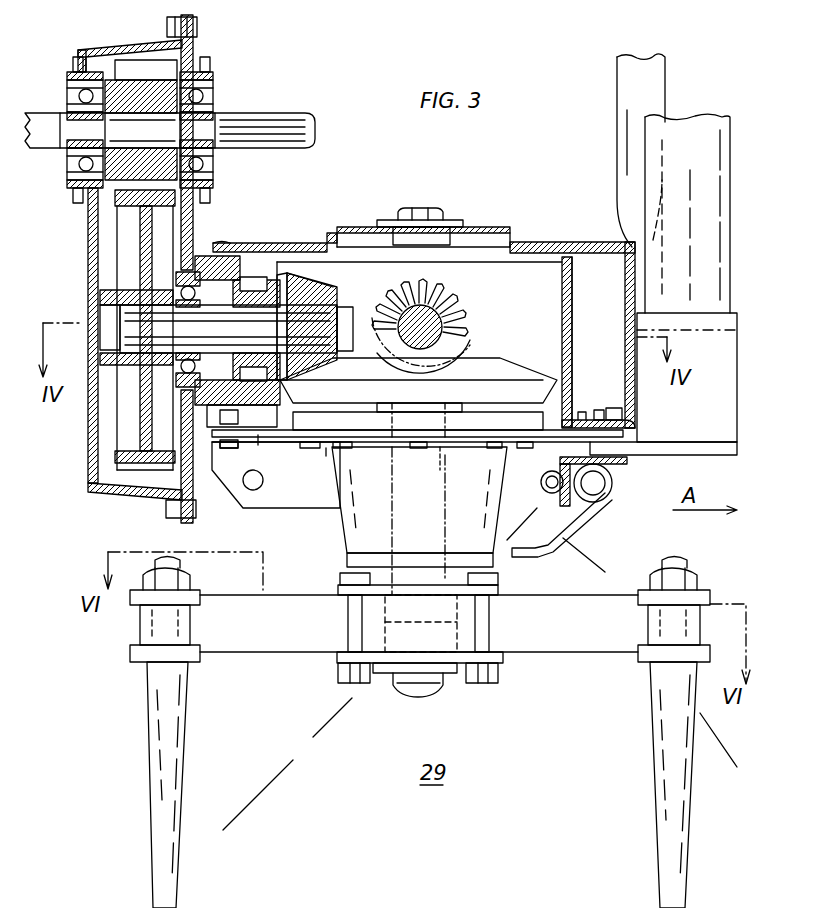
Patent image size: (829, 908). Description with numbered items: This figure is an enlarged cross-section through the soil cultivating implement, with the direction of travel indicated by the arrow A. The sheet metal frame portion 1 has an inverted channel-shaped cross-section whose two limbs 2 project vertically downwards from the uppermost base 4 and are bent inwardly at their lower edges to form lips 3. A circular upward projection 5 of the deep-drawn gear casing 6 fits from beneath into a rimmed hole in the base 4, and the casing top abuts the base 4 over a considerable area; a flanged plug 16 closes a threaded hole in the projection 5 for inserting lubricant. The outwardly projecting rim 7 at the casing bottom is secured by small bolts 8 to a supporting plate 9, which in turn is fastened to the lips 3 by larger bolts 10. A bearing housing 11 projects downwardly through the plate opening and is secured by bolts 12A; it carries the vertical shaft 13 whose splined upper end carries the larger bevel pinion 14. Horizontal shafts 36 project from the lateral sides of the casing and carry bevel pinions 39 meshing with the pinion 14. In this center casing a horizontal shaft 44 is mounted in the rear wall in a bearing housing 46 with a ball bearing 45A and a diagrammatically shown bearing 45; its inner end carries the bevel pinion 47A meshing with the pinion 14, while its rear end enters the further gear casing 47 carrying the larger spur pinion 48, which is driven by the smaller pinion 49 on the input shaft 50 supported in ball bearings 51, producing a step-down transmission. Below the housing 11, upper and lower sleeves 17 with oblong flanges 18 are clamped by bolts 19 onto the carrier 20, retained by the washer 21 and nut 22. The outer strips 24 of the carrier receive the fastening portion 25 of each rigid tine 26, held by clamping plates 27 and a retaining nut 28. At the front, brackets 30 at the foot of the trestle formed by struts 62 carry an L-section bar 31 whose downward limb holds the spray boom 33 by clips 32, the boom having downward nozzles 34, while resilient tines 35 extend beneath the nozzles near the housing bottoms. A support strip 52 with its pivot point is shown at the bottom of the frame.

The frame portion 1 is at (585, 237).
The limbs 2 is at (226, 250).
The lips 3 is at (628, 426).
The uppermost base 4 is at (300, 250).
The upward projection 5 is at (355, 228).
The gear casing 6 is at (582, 309).
The rim 7 is at (598, 408).
The small bolts 8 is at (581, 410).
The supporting plate 9 is at (325, 450).
The larger bolts 10 is at (232, 448).
The bearing housing 11 is at (347, 532).
The bolts 12A is at (440, 455).
The shaft 13 is at (405, 505).
The bevel pinion 14 is at (510, 366).
The flanged plug 16 is at (445, 222).
The sleeves 17 is at (510, 594).
The flanges 18 is at (340, 589).
The clamping bolts 19 is at (350, 684).
The carrier 20 is at (597, 664).
The retaining washer 21 is at (386, 676).
The nut 22 is at (435, 690).
The outer spring steel strips 24 is at (238, 652).
The fastening portion 25 is at (175, 558).
The soil working tine 26 is at (176, 860).
The clamping plates 27 is at (198, 606).
The retaining nut 28 is at (190, 584).
The brackets 30 is at (712, 320).
The bar 31 is at (627, 460).
The clips 32 is at (548, 475).
The spray boom 33 is at (542, 484).
The spray nozzles 34 is at (570, 504).
The resilient tines 35 is at (592, 522).
The shafts 36 is at (462, 338).
The bevel pinion 39 is at (447, 294).
The shaft 44 is at (102, 320).
The bearing 45 is at (255, 282).
The ball bearing 45A is at (226, 327).
The bearing housing 46 is at (205, 405).
The further gear casing 47 is at (112, 482).
The bevel pinion 47A is at (338, 296).
The pinion 48 is at (118, 440).
The pinion 49 is at (137, 70).
The shaft 50 is at (288, 115).
The ball bearings 51 is at (212, 84).
The support strips 52 is at (270, 508).
The struts 62 is at (617, 108).